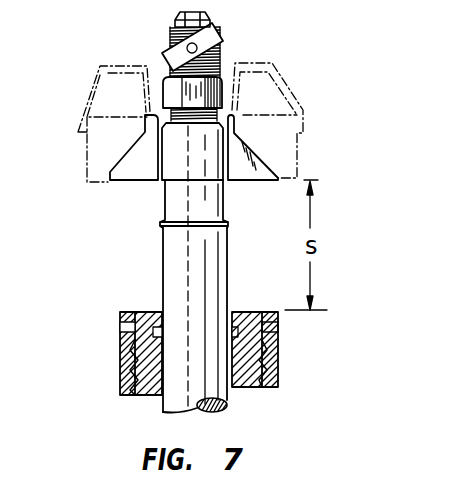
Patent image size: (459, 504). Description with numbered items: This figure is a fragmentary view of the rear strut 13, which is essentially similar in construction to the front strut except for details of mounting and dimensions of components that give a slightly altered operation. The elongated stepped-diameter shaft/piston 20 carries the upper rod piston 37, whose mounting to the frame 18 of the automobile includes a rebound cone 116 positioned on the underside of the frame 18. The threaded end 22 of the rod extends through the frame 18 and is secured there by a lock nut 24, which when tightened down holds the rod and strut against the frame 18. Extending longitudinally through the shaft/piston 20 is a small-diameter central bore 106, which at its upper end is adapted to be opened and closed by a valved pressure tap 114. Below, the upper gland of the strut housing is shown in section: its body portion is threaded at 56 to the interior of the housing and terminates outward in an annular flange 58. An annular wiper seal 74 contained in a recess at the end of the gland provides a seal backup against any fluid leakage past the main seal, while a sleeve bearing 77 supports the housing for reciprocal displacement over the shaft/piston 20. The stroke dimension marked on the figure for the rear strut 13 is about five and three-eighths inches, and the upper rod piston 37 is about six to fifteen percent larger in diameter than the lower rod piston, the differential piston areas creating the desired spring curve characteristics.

The rear strut 13 is at (282, 381).
The frame 18 is at (97, 80).
The shaft/piston 20 is at (161, 267).
The threaded end 22 is at (226, 60).
The lock nut 24 is at (167, 90).
The upper rod piston 37 is at (228, 264).
The threaded body portion 56 is at (132, 363).
The annular flange 58 is at (144, 311).
The annular wiper seal 74 is at (121, 327).
The sleeve bearing 77 is at (240, 355).
The central bore 106 is at (190, 256).
The valved pressure tap 114 is at (217, 34).
The rebound cone 116 is at (262, 165).